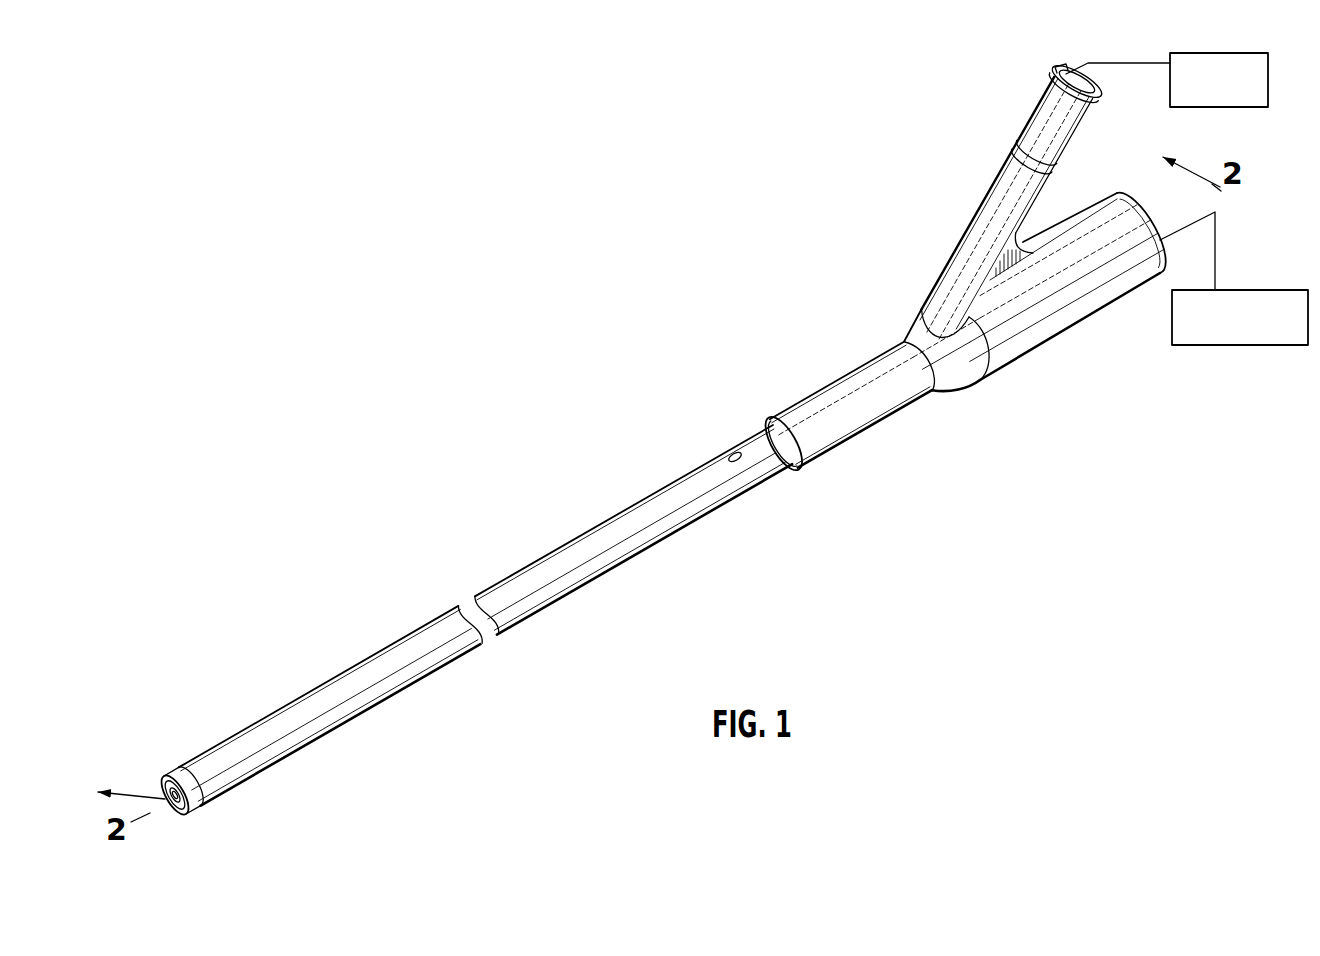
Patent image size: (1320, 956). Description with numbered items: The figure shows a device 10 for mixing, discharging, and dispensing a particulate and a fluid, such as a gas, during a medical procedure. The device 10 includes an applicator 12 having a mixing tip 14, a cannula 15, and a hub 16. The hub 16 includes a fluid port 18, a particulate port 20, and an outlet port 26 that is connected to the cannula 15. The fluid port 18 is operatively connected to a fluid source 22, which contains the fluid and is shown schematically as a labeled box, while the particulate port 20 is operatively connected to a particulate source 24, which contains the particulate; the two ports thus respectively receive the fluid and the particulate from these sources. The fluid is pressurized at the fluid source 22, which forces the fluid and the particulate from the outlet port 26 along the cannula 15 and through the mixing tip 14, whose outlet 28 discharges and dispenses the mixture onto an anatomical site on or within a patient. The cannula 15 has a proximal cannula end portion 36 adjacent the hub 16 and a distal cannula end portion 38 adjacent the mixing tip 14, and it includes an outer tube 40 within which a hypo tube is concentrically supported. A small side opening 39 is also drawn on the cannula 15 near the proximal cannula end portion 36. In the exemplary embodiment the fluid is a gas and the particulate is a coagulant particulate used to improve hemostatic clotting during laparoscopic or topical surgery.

The device 10 is at (519, 289).
The applicator 12 is at (617, 460).
The mixing tip 14 is at (156, 779).
The cannula 15 is at (530, 560).
The hub 16 is at (920, 305).
The fluid port 18 is at (982, 203).
The particulate port 20 is at (1065, 329).
The fluid source 22 is at (1258, 107).
The particulate source 24 is at (1185, 346).
The outlet port 26 is at (850, 428).
The outlet 28 is at (172, 817).
The proximal cannula end portion 36 is at (767, 433).
The distal cannula end portion 38 is at (203, 758).
The side hole 39 is at (731, 452).
The outer tube 40 is at (537, 592).